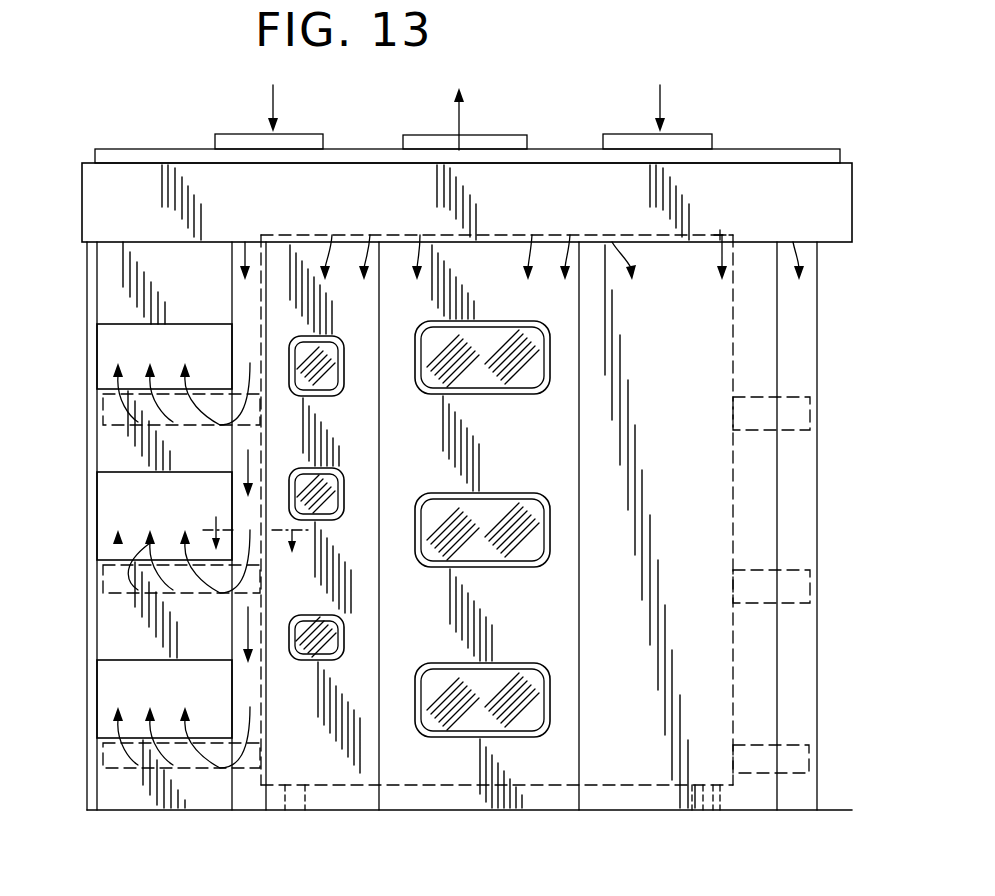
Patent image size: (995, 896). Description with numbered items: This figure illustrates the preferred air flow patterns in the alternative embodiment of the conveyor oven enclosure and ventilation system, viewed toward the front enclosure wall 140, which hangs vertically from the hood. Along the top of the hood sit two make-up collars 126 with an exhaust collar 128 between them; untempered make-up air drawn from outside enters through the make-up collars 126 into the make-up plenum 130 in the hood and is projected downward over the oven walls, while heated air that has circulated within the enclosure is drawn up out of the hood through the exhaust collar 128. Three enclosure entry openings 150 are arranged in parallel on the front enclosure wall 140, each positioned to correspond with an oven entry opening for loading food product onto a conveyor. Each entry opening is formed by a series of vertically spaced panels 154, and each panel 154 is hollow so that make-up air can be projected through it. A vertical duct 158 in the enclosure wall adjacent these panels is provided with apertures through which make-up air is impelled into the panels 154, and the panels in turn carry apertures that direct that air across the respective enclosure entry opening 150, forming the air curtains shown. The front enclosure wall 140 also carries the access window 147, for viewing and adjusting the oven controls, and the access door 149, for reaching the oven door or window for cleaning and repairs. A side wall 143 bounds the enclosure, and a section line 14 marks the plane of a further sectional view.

The make-up collar 126 is at (225, 132).
The exhaust collar 128 is at (483, 133).
The make-up plenum 130 is at (700, 198).
The panel 154 is at (118, 300).
The enclosure entry opening 150 is at (118, 347).
The vertical duct 158 is at (253, 310).
The side wall 143 is at (818, 490).
The front enclosure wall 140 is at (698, 757).
The section line 14- 14 is at (258, 539).
The access window 147 is at (308, 656).
The access door 149 is at (453, 718).